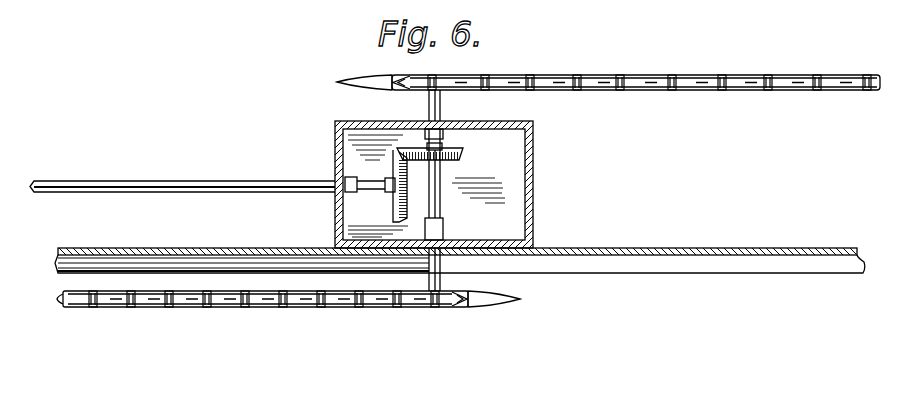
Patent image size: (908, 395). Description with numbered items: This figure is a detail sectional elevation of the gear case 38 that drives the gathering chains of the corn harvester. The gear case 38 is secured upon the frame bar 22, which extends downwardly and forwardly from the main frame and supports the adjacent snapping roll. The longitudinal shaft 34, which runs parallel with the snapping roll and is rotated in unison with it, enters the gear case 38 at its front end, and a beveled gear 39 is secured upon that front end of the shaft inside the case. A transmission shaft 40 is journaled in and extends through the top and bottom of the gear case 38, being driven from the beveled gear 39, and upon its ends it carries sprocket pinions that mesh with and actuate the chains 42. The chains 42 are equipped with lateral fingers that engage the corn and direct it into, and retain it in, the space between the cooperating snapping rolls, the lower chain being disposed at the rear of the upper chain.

The frame bar 22 is at (668, 265).
The longitudinal shaft 34 is at (200, 185).
The gear case 38 is at (533, 213).
The beveled gear 39 is at (394, 212).
The transmission shaft 40 is at (442, 197).
The chain 42 is at (635, 75).